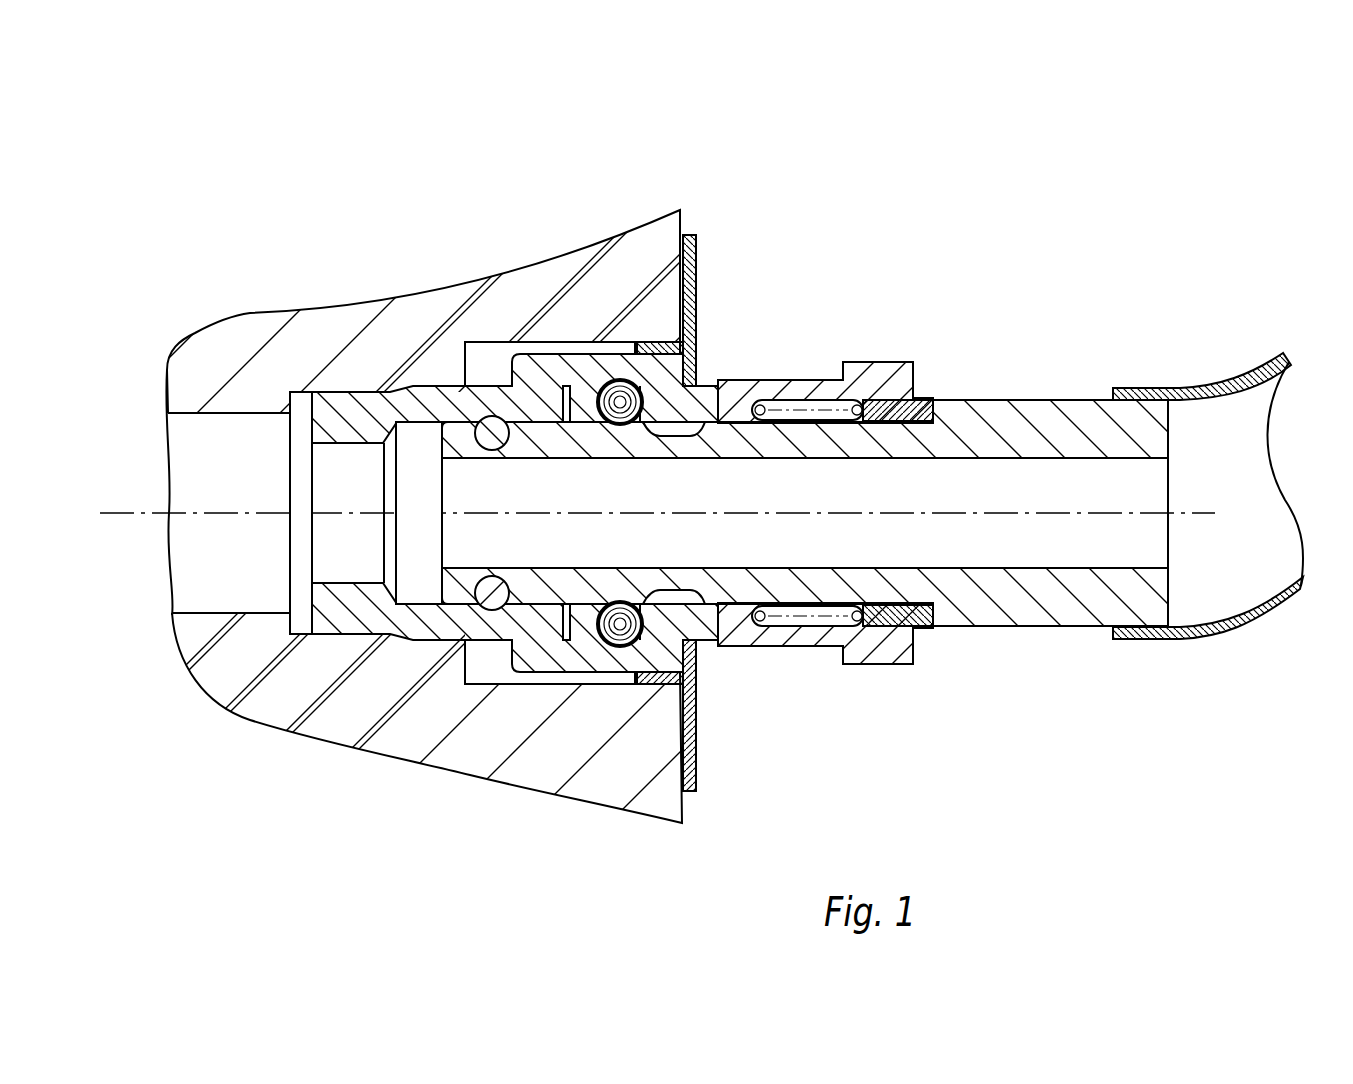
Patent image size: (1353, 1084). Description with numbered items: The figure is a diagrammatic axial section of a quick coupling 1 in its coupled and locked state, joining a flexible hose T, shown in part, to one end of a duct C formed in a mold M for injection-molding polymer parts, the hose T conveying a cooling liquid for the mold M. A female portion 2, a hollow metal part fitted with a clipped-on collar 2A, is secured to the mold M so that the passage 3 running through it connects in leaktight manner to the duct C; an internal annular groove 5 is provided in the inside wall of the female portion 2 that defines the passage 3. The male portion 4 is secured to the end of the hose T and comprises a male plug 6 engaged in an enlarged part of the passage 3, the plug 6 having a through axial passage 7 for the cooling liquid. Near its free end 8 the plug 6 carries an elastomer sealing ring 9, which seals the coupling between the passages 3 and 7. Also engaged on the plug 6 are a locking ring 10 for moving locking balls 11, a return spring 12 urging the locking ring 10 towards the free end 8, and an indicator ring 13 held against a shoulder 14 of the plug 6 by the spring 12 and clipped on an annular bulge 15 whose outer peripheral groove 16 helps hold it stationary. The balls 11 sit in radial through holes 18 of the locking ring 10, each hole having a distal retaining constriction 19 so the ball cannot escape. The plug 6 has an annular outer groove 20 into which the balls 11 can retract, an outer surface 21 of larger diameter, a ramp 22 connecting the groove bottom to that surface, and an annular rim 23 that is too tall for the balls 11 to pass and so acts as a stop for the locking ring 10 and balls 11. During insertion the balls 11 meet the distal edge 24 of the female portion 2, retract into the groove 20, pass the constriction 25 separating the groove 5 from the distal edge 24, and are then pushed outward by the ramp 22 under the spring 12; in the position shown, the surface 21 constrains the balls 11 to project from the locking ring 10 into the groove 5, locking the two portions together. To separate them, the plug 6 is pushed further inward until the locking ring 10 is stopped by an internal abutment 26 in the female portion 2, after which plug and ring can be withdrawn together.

The quick coupling 1 is at (506, 104).
The female portion 2 is at (547, 342).
The clipped-on collar 2A is at (687, 342).
The passage 3 is at (347, 583).
The male portion 4 is at (747, 347).
The internal annular groove 5 is at (494, 612).
The male plug 6 is at (1000, 600).
The through axial passage 7 is at (1136, 491).
The free end 8 is at (429, 563).
The annular sealing ring 9 is at (450, 640).
The locking ring 10 is at (793, 386).
The locking balls 11 is at (620, 602).
The return spring 12 is at (860, 406).
The indicator ring 13 is at (920, 630).
The shoulder 14 is at (917, 400).
The annular bulge 15 is at (817, 648).
The outer peripheral groove 16 is at (905, 640).
The radial through holes 18 is at (637, 604).
The distal retaining constriction 19 is at (593, 344).
The annular outer groove 20 is at (692, 608).
The outer surface 21 is at (638, 428).
The ramp 22 is at (748, 384).
The annular rim 23 is at (585, 423).
The distal edge 24 is at (730, 344).
The constriction 25 is at (653, 342).
The internal abutment 26 is at (593, 603).
The mold M is at (253, 334).
The duct C is at (213, 415).
The flexible hose T is at (1245, 372).